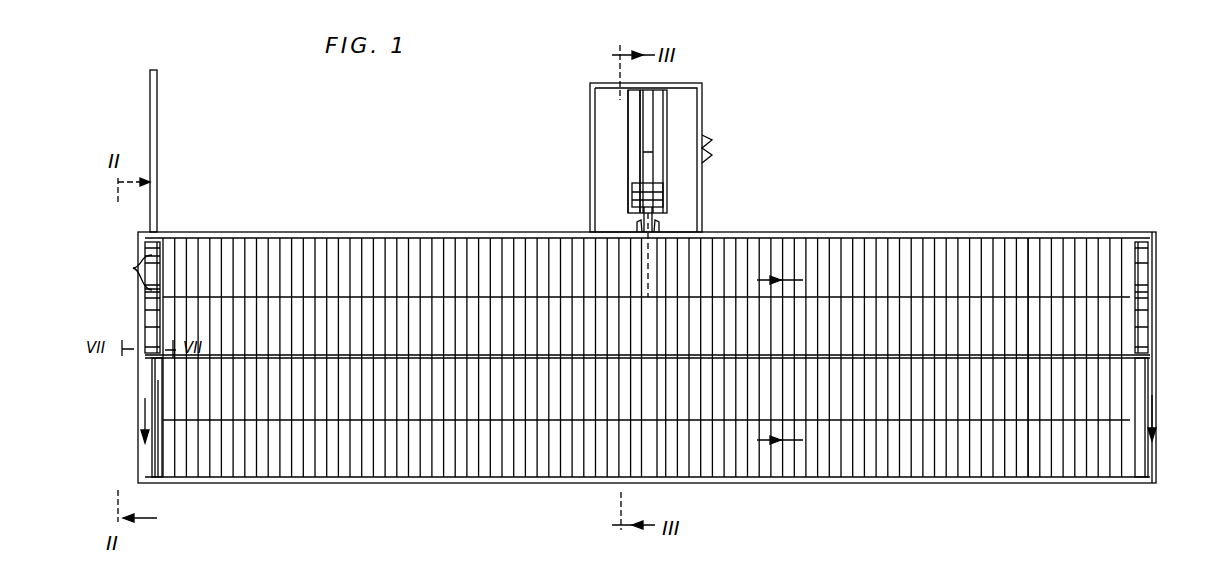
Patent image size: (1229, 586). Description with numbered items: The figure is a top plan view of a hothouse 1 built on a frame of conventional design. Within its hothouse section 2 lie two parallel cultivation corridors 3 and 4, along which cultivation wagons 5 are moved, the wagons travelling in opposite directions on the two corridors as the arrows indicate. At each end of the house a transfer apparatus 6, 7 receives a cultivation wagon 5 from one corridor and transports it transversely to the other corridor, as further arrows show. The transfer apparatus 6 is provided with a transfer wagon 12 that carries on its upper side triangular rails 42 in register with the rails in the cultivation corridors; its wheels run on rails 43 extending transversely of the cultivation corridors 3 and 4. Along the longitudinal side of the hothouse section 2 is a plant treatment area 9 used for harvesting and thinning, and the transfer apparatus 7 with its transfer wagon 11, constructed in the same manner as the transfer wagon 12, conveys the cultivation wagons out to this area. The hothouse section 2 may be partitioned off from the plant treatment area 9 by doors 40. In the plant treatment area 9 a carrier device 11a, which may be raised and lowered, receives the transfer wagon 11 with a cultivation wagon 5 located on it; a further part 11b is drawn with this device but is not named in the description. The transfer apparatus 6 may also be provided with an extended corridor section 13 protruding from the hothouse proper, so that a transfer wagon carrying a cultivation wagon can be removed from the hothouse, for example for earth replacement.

The hothouse 1 is at (965, 240).
The hothouse section 2 is at (1023, 258).
The cultivation corridor 3 is at (905, 255).
The cultivation corridor 4 is at (955, 455).
The cultivation wagon 5 is at (368, 250).
The transfer apparatus 6 is at (150, 386).
The transfer apparatus 7 is at (658, 283).
The plant treatment area 9 is at (675, 186).
The transfer wagon 11 is at (670, 108).
The carrier device 11a is at (628, 128).
The piston 11b is at (632, 195).
The transfer wagon 12 is at (157, 310).
The extended corridor section 13 is at (158, 97).
The doors 40 is at (637, 226).
The triangular rails 42 is at (133, 268).
The rails 43 is at (156, 447).